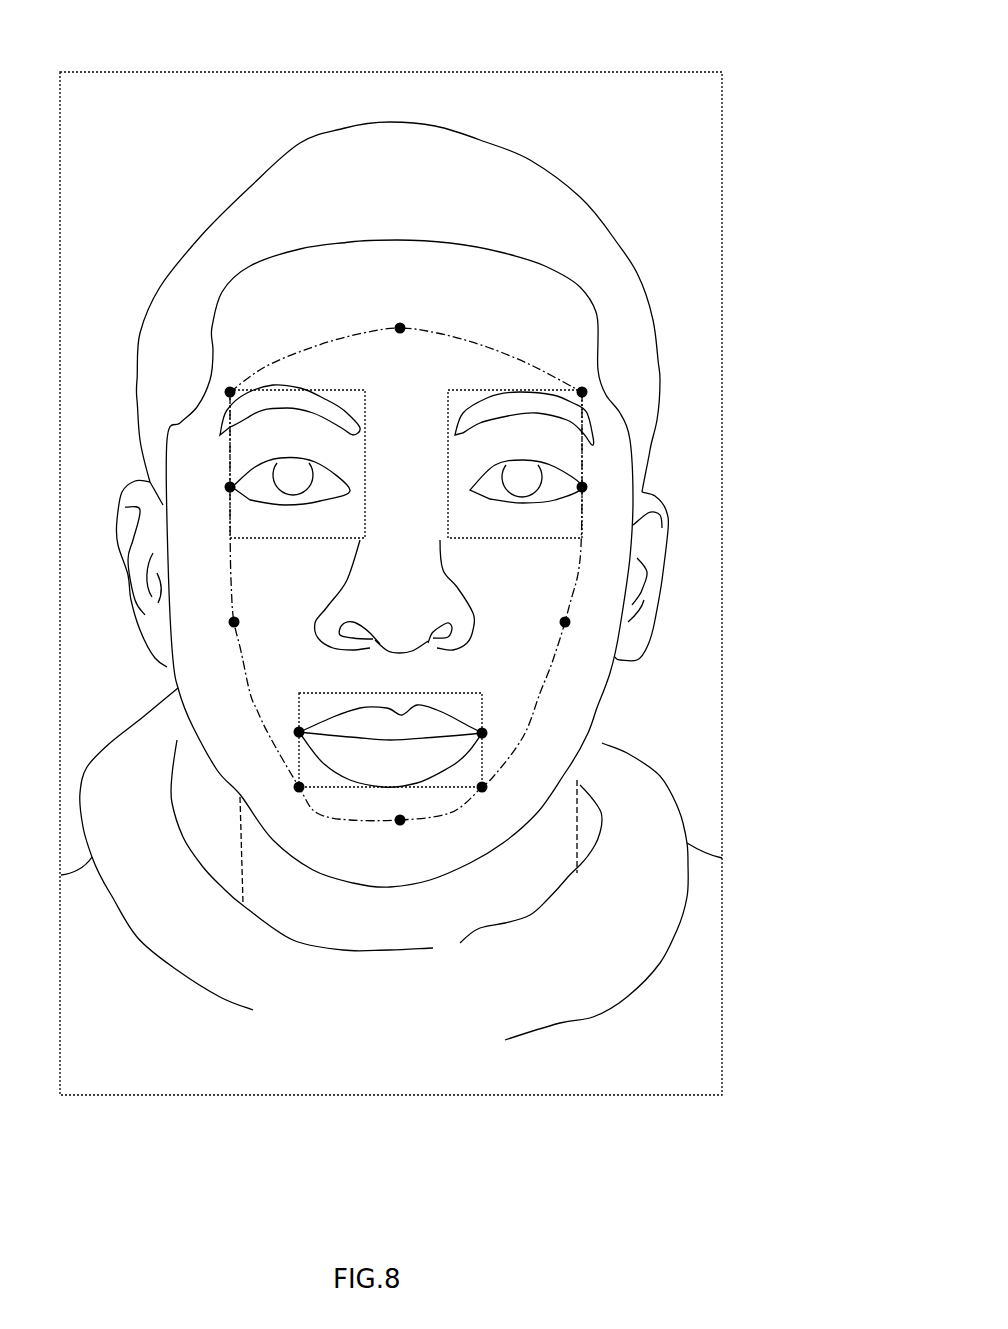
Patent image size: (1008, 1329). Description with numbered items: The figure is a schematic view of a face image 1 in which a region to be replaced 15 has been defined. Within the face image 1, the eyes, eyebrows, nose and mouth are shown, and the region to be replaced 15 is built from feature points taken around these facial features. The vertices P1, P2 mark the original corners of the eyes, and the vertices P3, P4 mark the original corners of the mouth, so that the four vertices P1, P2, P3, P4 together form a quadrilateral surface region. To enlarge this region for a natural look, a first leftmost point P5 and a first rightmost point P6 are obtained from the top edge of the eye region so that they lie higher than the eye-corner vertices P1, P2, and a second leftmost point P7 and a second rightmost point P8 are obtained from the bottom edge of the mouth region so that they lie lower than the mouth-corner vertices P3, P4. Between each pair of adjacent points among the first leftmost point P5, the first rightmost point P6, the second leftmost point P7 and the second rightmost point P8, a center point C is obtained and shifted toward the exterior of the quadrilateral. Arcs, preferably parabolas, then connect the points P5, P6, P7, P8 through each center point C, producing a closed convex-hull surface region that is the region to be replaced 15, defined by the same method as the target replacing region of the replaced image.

The face image 1 is at (558, 72).
The region to be replaced 15 is at (520, 353).
The vertex of the original corner of eye P1 is at (211, 486).
The vertex of the original corner of eye P2 is at (599, 490).
The vertex of the original corner of mouth P3 is at (286, 718).
The vertex of the original corner of mouth P4 is at (496, 718).
The first leftmost point P5 is at (232, 378).
The first rightmost point P6 is at (580, 378).
The second leftmost point P7 is at (291, 803).
The second rightmost point P8 is at (495, 803).
The center point C is at (399, 576).